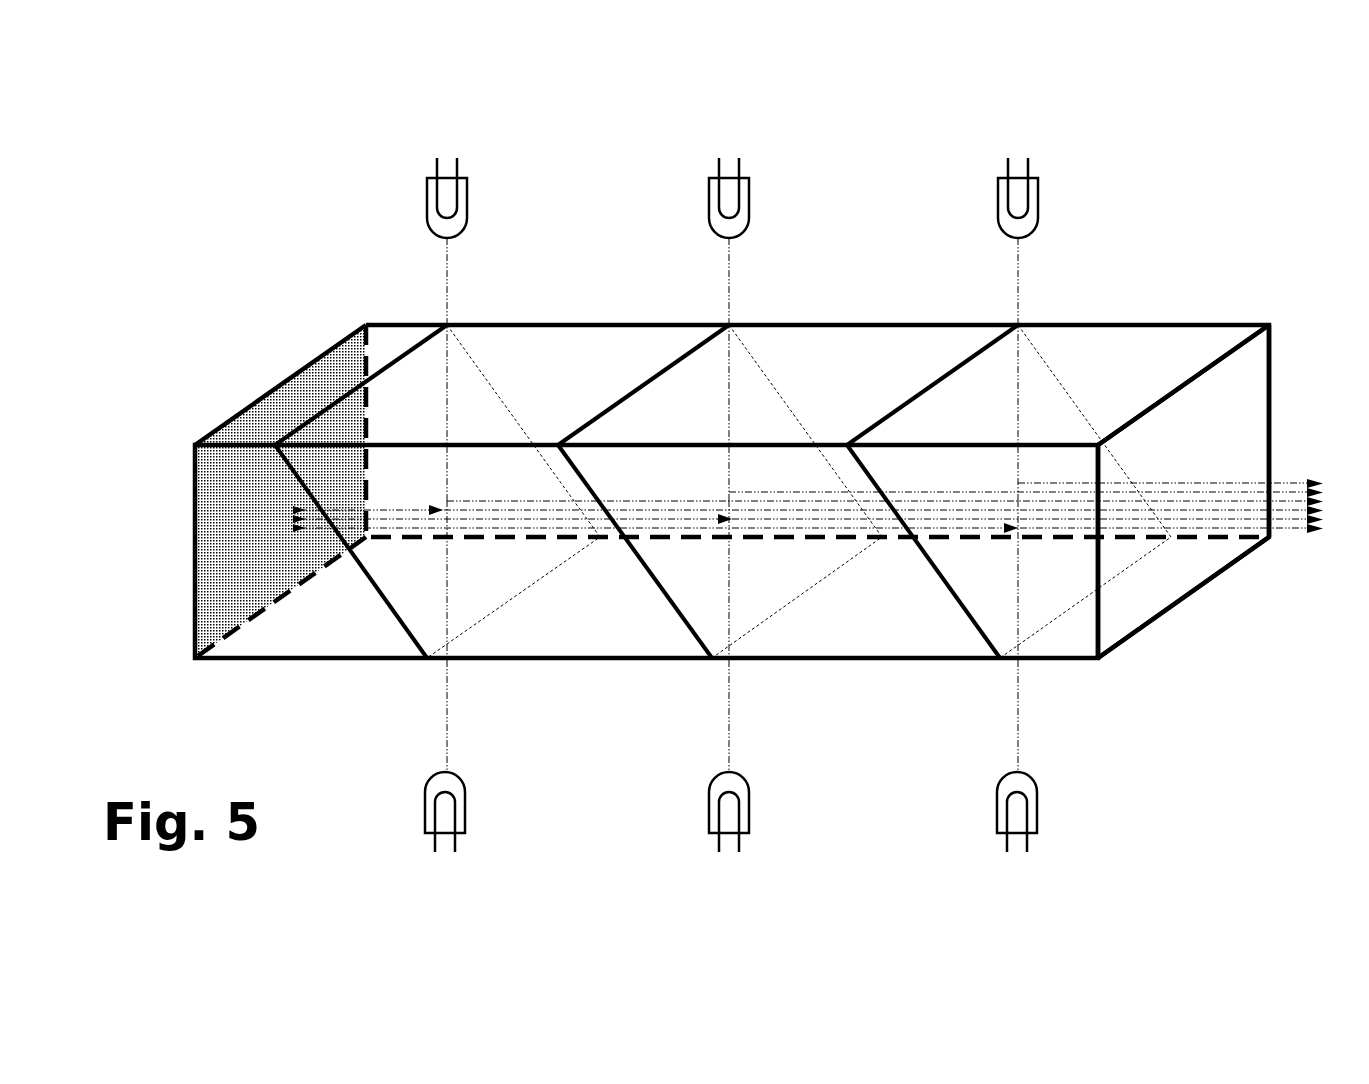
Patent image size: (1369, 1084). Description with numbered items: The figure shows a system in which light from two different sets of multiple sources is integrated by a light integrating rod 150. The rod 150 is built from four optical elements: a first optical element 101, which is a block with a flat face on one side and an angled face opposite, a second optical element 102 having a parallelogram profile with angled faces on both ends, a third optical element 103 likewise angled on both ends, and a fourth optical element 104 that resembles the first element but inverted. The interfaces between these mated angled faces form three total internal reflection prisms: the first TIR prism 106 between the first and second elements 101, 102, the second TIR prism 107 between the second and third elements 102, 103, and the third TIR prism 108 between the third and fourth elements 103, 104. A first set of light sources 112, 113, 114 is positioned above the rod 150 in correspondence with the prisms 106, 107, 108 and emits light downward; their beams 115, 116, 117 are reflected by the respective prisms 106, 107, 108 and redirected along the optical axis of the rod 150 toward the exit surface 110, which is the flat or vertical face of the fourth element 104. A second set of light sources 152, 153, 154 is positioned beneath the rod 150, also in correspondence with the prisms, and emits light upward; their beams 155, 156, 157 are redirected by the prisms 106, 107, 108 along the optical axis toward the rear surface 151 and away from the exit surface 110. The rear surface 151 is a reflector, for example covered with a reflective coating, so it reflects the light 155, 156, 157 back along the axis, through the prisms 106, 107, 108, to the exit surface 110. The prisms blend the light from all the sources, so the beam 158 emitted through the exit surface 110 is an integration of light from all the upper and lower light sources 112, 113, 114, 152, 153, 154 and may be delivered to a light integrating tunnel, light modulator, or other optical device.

The light integrating rod 150 is at (250, 342).
The rear surface 151 is at (193, 630).
The first optical element 101 is at (393, 338).
The second optical element 102 is at (562, 340).
The third optical element 103 is at (836, 345).
The fourth optical element 104 is at (1156, 345).
The first TIR prism 106 is at (403, 635).
The second TIR prism 107 is at (687, 628).
The third TIR prism 108 is at (962, 628).
The exit surface 110 is at (1157, 588).
The first upper light source 112 is at (468, 207).
The second upper light source 113 is at (751, 207).
The third upper light source 114 is at (1039, 208).
The first upper light beam 115 is at (447, 369).
The second upper light beam 116 is at (731, 369).
The third upper light beam 117 is at (1018, 369).
The first lower light source 152 is at (466, 800).
The second lower light source 153 is at (750, 800).
The third lower light source 154 is at (1038, 802).
The first lower light beam 155 is at (447, 636).
The second lower light beam 156 is at (731, 636).
The third lower light beam 157 is at (1019, 636).
The integrated light beam 158 is at (1297, 500).